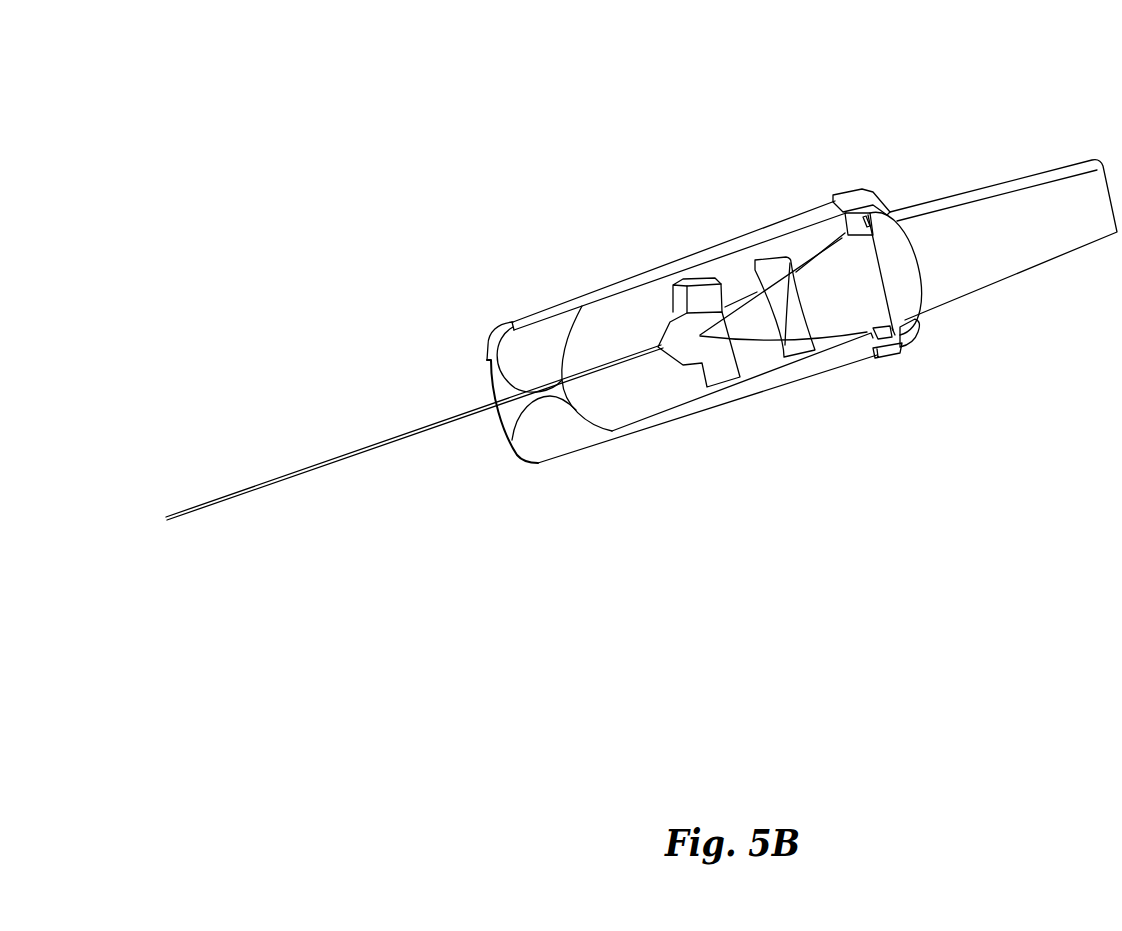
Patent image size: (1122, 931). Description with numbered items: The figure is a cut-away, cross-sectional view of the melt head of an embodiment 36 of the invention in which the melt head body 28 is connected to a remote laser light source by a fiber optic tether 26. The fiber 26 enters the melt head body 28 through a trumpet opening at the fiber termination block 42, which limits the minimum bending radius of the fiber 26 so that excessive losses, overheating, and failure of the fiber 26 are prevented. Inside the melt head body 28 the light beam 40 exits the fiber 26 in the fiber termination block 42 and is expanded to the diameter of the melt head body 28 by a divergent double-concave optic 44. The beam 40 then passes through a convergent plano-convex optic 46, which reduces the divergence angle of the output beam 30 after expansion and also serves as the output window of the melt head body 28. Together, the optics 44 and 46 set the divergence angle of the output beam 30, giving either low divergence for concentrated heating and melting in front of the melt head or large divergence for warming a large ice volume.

The fiber optic tether 26 is at (312, 462).
The melt head body 28 is at (623, 280).
The output beam 30 is at (1015, 222).
The embodiment 36 is at (476, 86).
The light beam 40 is at (756, 320).
The fiber termination block 42 is at (708, 343).
The divergent double-concave optic 44 is at (766, 265).
The convergent plano-convex optic 46 is at (907, 333).